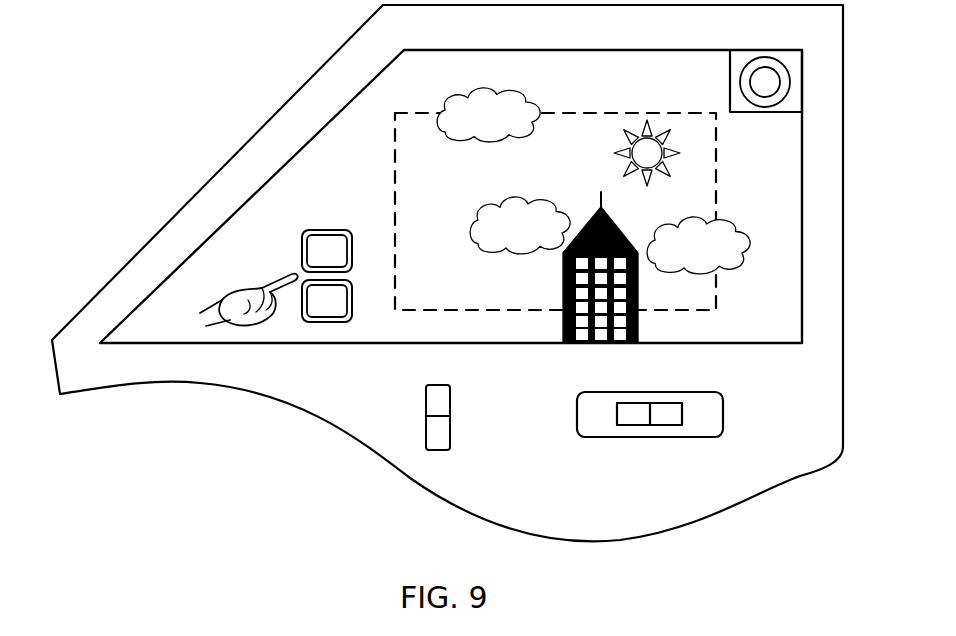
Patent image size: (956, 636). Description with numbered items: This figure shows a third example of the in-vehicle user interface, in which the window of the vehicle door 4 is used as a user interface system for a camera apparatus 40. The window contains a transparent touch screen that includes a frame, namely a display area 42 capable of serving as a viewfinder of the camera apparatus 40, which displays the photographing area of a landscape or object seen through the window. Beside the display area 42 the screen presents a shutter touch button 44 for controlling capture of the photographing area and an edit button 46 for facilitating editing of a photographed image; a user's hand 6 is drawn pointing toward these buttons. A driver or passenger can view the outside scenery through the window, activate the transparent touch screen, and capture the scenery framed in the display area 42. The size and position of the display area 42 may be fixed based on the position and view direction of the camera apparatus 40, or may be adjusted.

The door 4 is at (243, 140).
The user hand 6 is at (222, 292).
The camera apparatus 40 is at (727, 81).
The display area 42 is at (388, 212).
The shutter touch button 44 is at (327, 228).
The edit button 46 is at (358, 302).